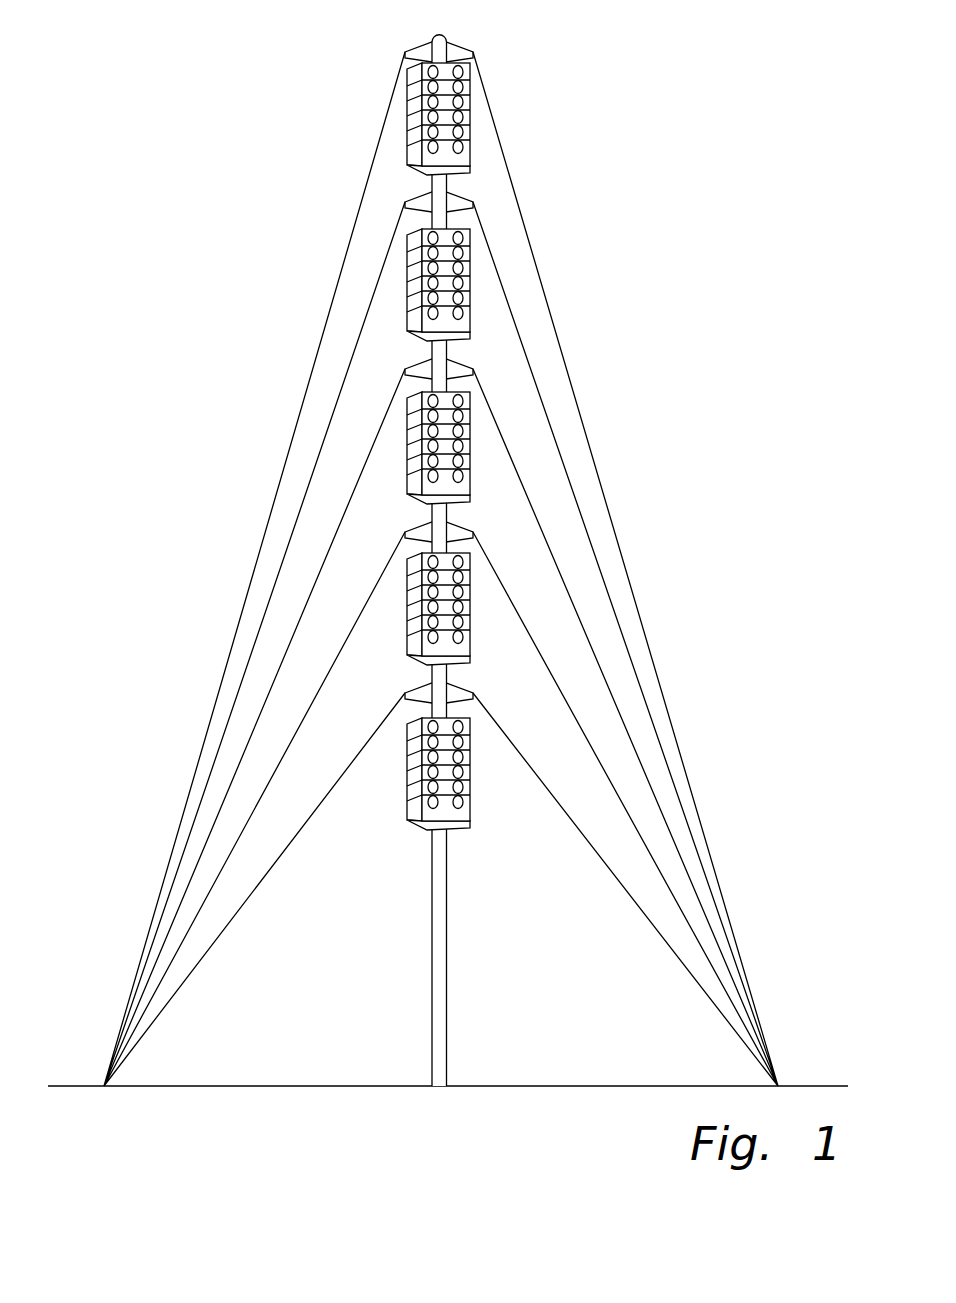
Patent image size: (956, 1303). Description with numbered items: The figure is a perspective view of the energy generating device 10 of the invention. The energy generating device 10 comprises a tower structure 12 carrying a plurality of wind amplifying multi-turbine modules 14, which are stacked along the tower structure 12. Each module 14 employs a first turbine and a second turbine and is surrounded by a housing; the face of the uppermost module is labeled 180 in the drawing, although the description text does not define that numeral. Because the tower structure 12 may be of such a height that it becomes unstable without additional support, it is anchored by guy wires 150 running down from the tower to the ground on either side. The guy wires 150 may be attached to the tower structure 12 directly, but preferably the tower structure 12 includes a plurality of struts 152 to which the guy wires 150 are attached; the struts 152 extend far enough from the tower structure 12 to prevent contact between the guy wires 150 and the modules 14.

The energy generating device 10 is at (313, 1050).
The tower structure 12 is at (448, 998).
The wind amplifying multi-turbine module 14 is at (495, 423).
The module face 180 is at (472, 108).
The guy wire 150 is at (335, 785).
The strut 152 is at (462, 678).